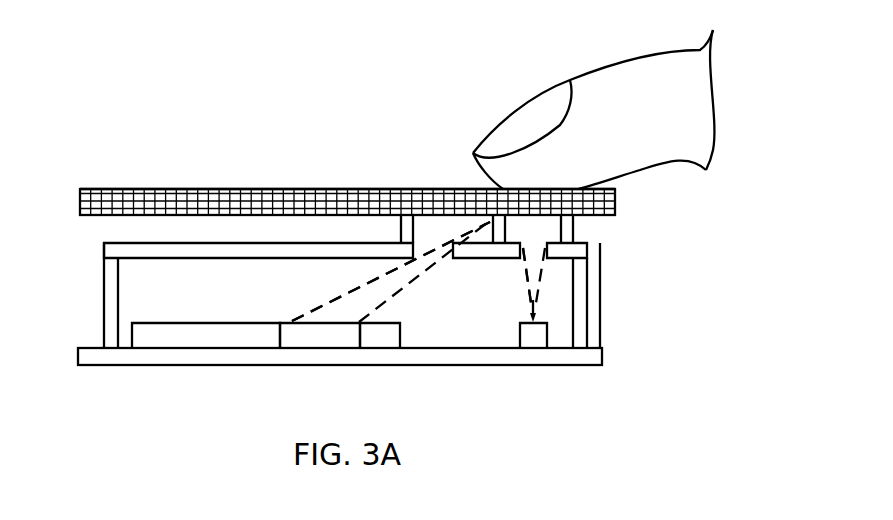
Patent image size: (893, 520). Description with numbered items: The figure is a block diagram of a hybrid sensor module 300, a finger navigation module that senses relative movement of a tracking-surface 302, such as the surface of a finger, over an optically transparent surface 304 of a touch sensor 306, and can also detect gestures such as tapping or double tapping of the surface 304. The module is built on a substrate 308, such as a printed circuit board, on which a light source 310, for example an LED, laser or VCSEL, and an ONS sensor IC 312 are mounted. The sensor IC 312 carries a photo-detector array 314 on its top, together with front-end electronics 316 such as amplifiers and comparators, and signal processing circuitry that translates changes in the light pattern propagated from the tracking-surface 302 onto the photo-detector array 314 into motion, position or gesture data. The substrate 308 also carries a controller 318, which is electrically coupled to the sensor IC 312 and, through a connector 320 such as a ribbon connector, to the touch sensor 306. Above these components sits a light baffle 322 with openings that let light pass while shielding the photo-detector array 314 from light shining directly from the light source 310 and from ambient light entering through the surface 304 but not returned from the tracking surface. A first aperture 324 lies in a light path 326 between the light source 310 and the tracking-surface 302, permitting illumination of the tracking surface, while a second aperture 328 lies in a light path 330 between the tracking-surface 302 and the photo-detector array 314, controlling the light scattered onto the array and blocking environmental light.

The hybrid sensor module 300 is at (80, 68).
The tracking-surface 302 is at (476, 172).
The optically transparent surface 304 is at (128, 180).
The touch sensor 306 is at (78, 203).
The substrate 308 is at (76, 355).
The light source 310 is at (518, 340).
The sensor IC 312 is at (320, 350).
The photo-detector array 314 is at (310, 317).
The front-end electronics 316 is at (380, 350).
The controller 318 is at (203, 350).
The connector 320 is at (602, 281).
The light baffle 322 is at (100, 246).
The first aperture 324 is at (535, 242).
The light path 326 is at (529, 289).
The second aperture 328 is at (437, 244).
The light path 330 is at (383, 303).